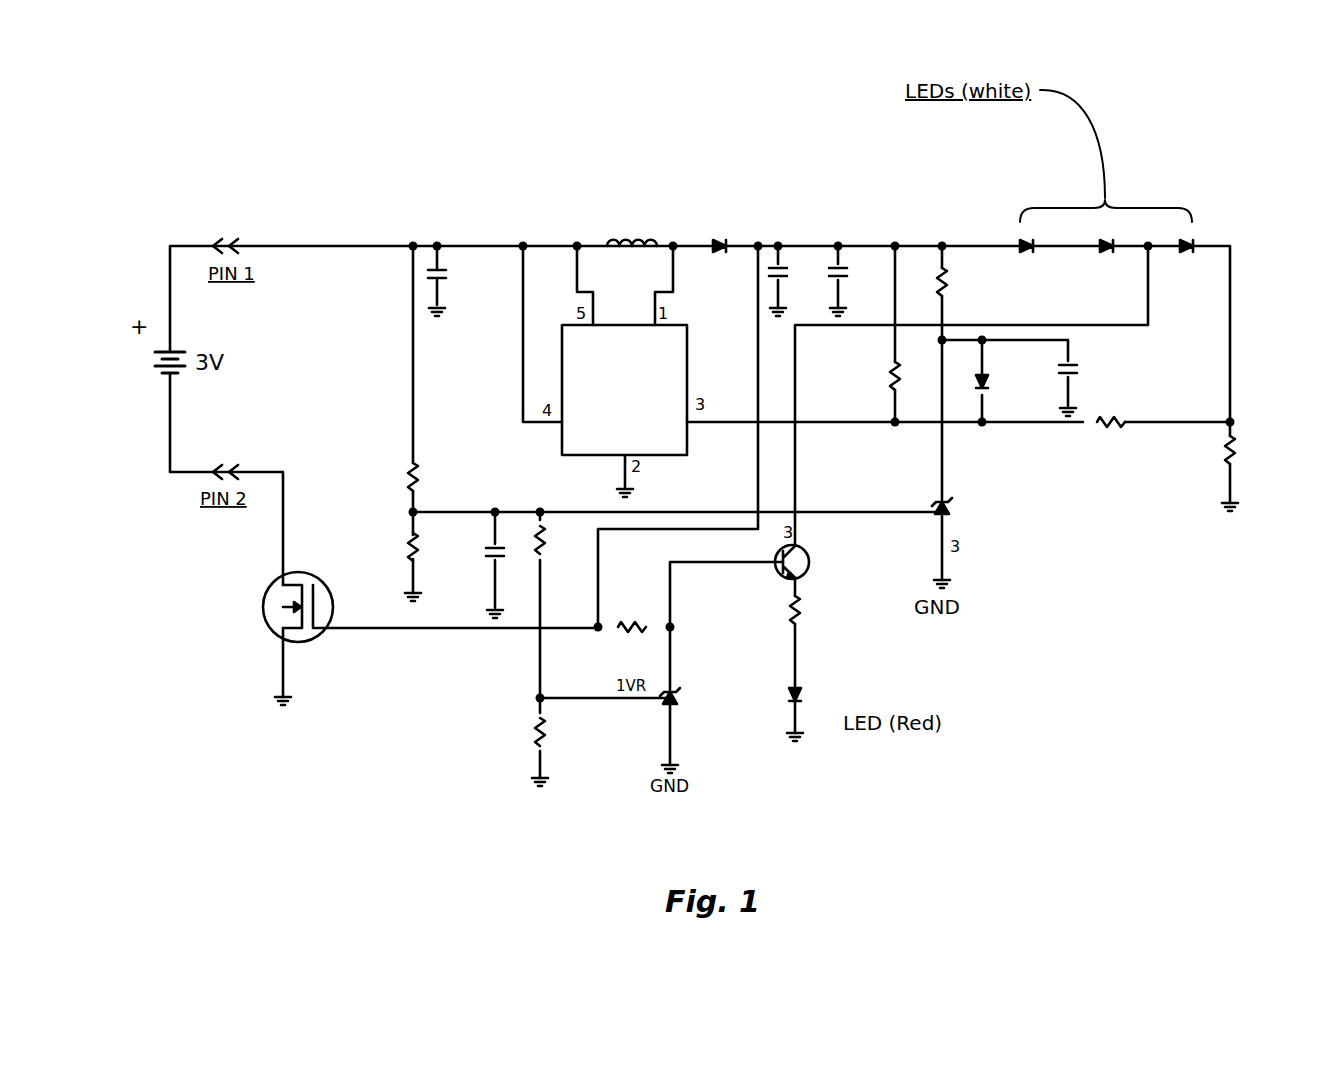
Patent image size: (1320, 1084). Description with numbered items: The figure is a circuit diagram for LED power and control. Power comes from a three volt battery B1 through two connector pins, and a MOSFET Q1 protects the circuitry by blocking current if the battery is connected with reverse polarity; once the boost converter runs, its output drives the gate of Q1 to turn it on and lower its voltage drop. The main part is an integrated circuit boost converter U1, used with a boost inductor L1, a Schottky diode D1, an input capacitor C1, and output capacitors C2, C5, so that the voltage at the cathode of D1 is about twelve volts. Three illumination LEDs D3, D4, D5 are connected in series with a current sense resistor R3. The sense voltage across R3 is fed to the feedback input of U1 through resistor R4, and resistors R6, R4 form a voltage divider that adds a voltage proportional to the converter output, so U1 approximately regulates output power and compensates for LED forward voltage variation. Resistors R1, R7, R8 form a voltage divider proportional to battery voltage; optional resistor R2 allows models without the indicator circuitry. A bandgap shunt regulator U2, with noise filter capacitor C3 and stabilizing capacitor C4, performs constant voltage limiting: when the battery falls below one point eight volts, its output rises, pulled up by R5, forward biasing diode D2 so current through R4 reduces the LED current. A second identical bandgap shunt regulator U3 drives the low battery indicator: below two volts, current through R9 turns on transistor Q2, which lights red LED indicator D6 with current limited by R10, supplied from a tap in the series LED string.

The battery B1 is at (146, 363).
The MOSFET Q1 is at (277, 607).
The transistor Q2 is at (812, 562).
The resistor R1 is at (430, 477).
The optional resistor R2 is at (430, 547).
The current sense resistor R3 is at (1249, 455).
The resistor R4 is at (1109, 436).
The resistor R5 is at (960, 282).
The resistor R6 is at (876, 376).
The resistor R7 is at (558, 542).
The resistor R8 is at (559, 736).
The resistor R9 is at (630, 611).
The resistor R10 is at (821, 617).
The input capacitor C1 is at (455, 275).
The output capacitor C2 is at (795, 275).
The capacitor C3 is at (508, 551).
The capacitor C4 is at (1086, 373).
The output capacitor C5 is at (855, 275).
The boost inductor L1 is at (632, 226).
The integrated circuit boost converter U1 is at (624, 390).
The bandgap shunt regulator U2 is at (962, 506).
The bandgap shunt regulator U3 is at (692, 699).
The Schottky diode D1 is at (720, 261).
The diode D2 is at (1001, 383).
The illumination LED D3 is at (1024, 259).
The illumination LED D4 is at (1104, 259).
The illumination LED D5 is at (1184, 259).
The red LED indicator D6 is at (808, 699).